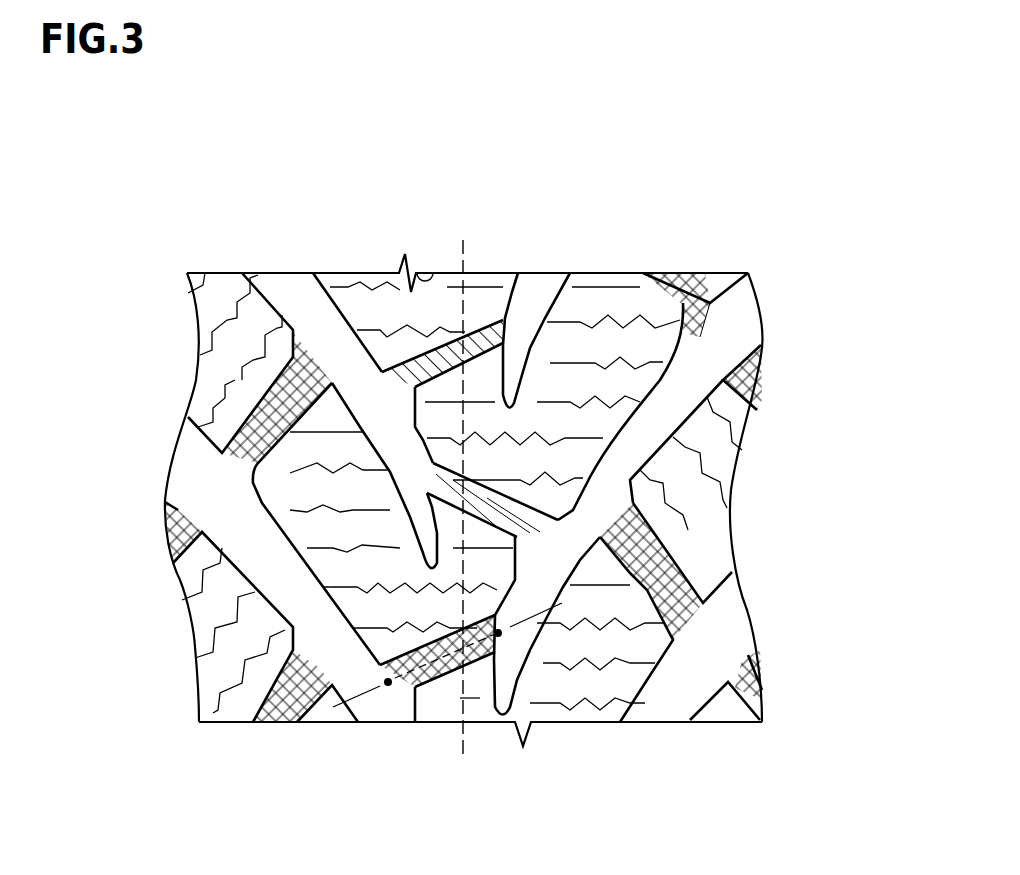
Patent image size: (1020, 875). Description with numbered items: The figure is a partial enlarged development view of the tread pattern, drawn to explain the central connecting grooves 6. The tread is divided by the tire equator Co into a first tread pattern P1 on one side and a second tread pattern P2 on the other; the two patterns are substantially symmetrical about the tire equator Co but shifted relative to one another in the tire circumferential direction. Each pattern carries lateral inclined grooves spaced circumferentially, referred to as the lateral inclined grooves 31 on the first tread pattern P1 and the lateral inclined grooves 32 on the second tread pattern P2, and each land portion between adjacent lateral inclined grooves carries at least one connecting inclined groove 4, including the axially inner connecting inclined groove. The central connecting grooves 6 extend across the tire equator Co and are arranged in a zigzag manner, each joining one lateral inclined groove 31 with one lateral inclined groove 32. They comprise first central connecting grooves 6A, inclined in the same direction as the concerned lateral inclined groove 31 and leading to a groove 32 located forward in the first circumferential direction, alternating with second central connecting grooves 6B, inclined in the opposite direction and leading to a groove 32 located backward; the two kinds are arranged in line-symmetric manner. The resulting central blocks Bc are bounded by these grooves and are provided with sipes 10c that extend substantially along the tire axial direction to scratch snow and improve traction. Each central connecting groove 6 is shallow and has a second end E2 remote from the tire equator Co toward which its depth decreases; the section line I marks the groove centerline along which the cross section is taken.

The lateral inclined grooves (first tread pattern) 31 is at (300, 290).
The lateral inclined grooves (second tread pattern) 32 is at (800, 469).
The connecting inclined groove 4 is at (288, 408).
The central connecting grooves 6 is at (835, 292).
The first central connecting grooves 6A is at (488, 508).
The second central connecting grooves 6B is at (470, 358).
The sipes 10c is at (360, 543).
The central blocks Bc is at (307, 488).
The tire equator Co is at (461, 483).
The second end E2 is at (387, 690).
The first tread pattern P1 is at (272, 205).
The second tread pattern P2 is at (628, 205).
The section line I- I is at (448, 656).